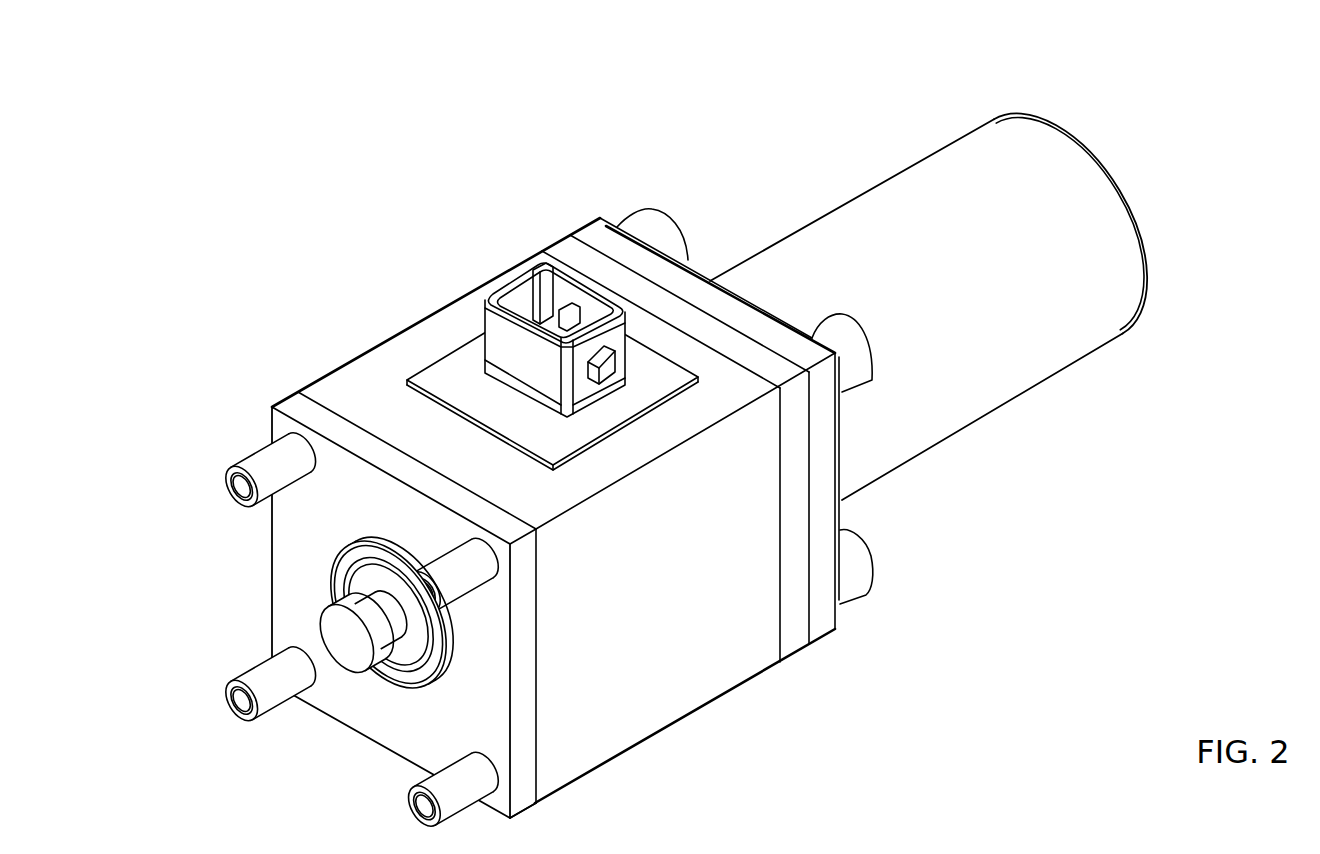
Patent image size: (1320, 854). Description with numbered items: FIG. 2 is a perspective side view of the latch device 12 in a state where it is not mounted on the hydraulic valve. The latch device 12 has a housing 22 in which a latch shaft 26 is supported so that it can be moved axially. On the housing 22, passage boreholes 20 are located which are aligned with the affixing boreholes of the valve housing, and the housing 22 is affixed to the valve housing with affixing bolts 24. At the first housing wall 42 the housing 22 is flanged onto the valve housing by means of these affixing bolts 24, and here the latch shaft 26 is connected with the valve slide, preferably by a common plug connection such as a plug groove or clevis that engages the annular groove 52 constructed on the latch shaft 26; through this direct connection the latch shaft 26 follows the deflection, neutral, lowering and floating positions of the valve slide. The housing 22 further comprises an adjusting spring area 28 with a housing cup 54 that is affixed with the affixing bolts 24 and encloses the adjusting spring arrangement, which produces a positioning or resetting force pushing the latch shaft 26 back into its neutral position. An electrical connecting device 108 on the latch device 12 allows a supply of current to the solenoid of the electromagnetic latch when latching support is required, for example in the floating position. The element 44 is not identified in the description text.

The latch device 12 is at (514, 238).
The passage boreholes 20 is at (272, 407).
The housing 22 is at (385, 383).
The affixing bolts 24 is at (238, 487).
The latch shaft 26 is at (341, 647).
The adjusting spring area 28 is at (795, 215).
The first housing wall 42 is at (325, 423).
The mounting plate 44 is at (605, 272).
The annular groove 52 is at (365, 598).
The housing cup 54 is at (1103, 167).
The electrical connecting device 108 is at (500, 347).